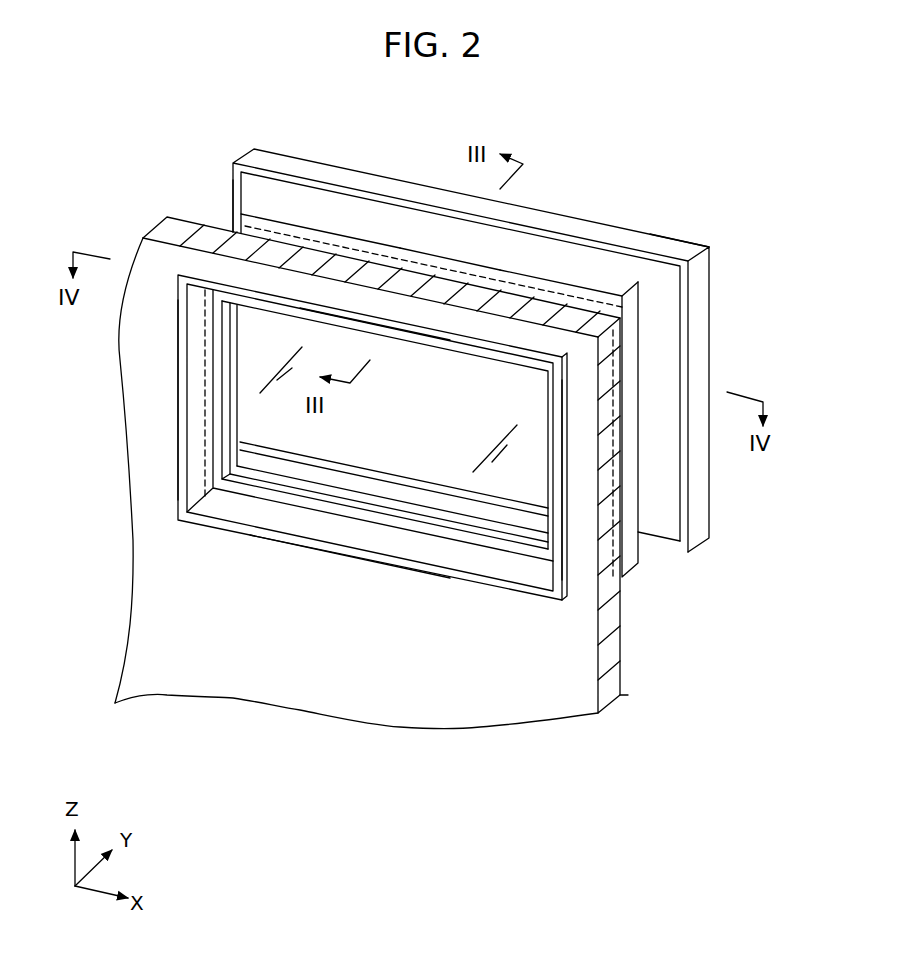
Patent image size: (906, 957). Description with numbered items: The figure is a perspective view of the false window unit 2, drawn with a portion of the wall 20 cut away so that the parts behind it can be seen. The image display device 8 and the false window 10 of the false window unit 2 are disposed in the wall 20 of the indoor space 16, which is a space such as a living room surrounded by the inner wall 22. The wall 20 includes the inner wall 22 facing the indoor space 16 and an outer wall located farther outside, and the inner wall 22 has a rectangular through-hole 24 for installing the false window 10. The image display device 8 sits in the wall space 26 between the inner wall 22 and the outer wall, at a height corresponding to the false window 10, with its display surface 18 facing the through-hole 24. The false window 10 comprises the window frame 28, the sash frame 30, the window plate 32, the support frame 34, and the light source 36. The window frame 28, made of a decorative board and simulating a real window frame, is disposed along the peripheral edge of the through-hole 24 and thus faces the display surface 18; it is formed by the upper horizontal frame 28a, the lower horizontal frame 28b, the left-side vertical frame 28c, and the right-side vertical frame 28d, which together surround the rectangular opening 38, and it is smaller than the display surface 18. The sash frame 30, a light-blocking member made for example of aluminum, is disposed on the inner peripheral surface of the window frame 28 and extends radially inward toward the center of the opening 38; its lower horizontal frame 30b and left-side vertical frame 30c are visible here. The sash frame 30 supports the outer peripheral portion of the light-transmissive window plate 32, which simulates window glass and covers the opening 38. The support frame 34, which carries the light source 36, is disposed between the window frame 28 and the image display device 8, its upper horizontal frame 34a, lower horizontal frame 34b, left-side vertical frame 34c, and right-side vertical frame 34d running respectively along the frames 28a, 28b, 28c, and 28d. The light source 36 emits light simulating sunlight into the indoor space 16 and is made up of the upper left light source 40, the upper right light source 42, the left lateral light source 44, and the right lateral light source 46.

The false window unit 2 is at (672, 104).
The image display device 8 is at (700, 294).
The false window 10 is at (200, 185).
The indoor space 16 is at (248, 669).
The display surface 18 is at (668, 328).
The wall 20 is at (118, 484).
The inner wall 22 is at (572, 674).
The through-hole 24 is at (195, 432).
The wall space 26 is at (683, 602).
The window frame 28 is at (470, 578).
The upper horizontal frame 28a is at (404, 343).
The lower horizontal frame 28b is at (362, 542).
The left-side vertical frame 28c is at (188, 380).
The right-side vertical frame 28d is at (555, 493).
The sash frame 30 is at (306, 522).
The lower horizontal frame 30b is at (270, 505).
The left-side vertical frame 30c is at (215, 355).
The window plate 32 is at (522, 468).
The support frame 34 is at (418, 256).
The upper horizontal frame 34a is at (475, 268).
The lower horizontal frame 34b is at (414, 542).
The left-side vertical frame 34c is at (237, 412).
The right-side vertical frame 34d is at (628, 517).
The light source 36 is at (353, 226).
The opening 38 is at (240, 513).
The upper left light source 40 is at (300, 226).
The upper right light source 42 is at (537, 282).
The left lateral light source 44 is at (203, 258).
The right lateral light source 46 is at (636, 358).